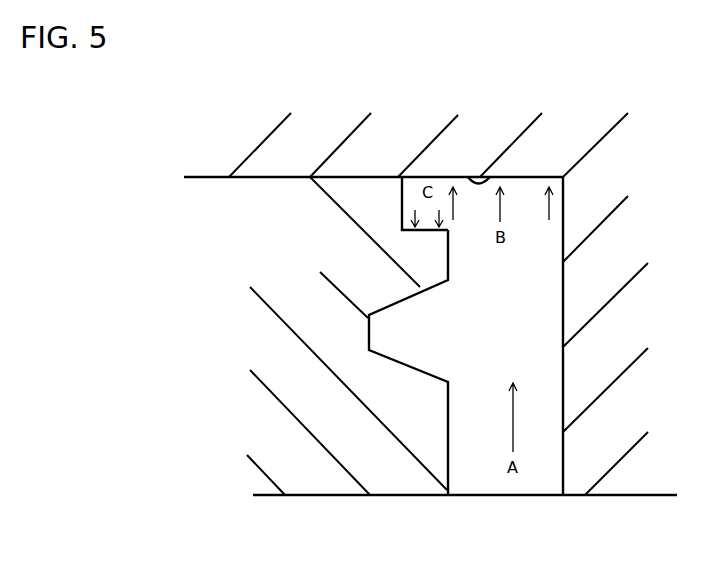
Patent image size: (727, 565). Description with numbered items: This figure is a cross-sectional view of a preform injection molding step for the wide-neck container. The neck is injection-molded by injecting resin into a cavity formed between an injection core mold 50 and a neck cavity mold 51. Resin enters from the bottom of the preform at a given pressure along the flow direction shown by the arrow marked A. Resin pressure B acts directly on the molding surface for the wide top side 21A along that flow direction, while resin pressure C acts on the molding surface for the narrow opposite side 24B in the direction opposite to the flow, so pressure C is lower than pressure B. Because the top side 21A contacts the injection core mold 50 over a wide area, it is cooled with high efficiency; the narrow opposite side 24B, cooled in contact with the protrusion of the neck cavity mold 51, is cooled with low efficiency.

The top side 21A is at (470, 178).
The injection core mold 50 is at (550, 153).
The neck cavity mold 51 is at (266, 343).
The opposite side 24B is at (432, 229).